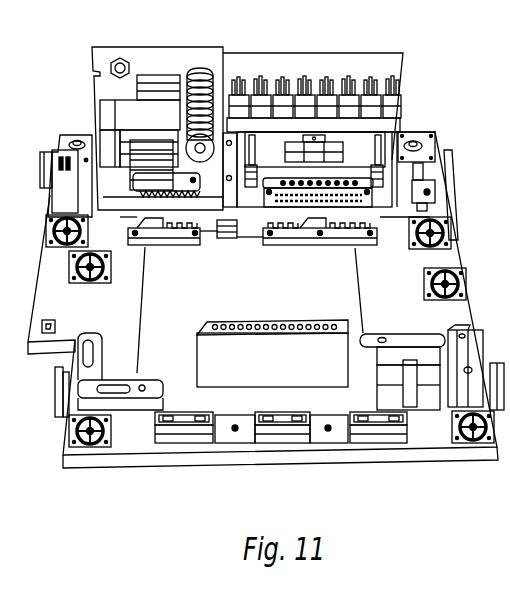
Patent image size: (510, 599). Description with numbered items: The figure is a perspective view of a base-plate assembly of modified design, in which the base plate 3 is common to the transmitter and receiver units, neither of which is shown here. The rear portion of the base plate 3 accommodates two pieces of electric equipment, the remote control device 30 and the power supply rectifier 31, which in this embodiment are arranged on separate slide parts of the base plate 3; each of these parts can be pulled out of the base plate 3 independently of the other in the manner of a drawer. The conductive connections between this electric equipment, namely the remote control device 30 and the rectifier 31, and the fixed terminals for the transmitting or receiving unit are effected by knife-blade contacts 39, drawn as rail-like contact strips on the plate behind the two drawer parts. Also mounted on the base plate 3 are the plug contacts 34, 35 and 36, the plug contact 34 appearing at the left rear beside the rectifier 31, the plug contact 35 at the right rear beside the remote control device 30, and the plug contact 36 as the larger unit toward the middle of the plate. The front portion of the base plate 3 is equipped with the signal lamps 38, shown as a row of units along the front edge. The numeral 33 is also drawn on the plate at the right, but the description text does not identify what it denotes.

The base plate 3 is at (452, 310).
The remote control device 30 is at (322, 60).
The power supply rectifier 31 is at (173, 52).
The screw feet / fan units 33 is at (452, 242).
The plug contact 34 is at (60, 160).
The plug contact 35 is at (430, 182).
The plug contact 36 is at (296, 330).
The signal lamps 38 is at (190, 437).
The knife-blade contacts 39 is at (62, 218).